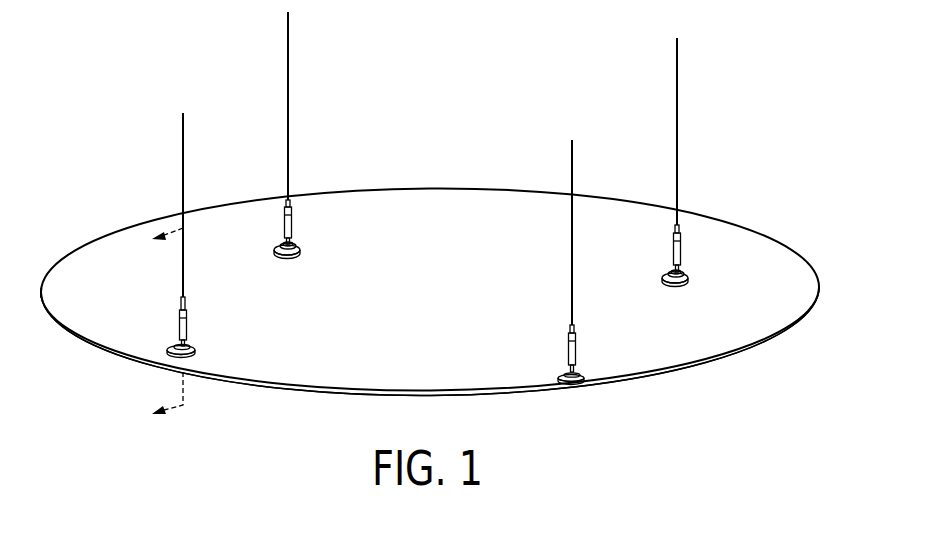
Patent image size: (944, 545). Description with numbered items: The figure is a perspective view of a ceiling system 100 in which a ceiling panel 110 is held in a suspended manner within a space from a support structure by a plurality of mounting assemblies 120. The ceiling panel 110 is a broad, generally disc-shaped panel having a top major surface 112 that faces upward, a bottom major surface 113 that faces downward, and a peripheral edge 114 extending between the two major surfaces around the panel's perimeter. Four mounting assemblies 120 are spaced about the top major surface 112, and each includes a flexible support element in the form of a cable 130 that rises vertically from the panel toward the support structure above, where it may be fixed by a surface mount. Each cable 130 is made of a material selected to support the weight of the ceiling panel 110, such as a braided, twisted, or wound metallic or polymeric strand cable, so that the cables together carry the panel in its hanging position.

The ceiling system 100 is at (117, 127).
The ceiling panel 110 is at (714, 219).
The top major surface 112 is at (749, 243).
The bottom major surface 113 is at (645, 408).
The peripheral edge 114 is at (718, 365).
The mounting assembly 120 is at (327, 150).
The cable 130 is at (290, 94).